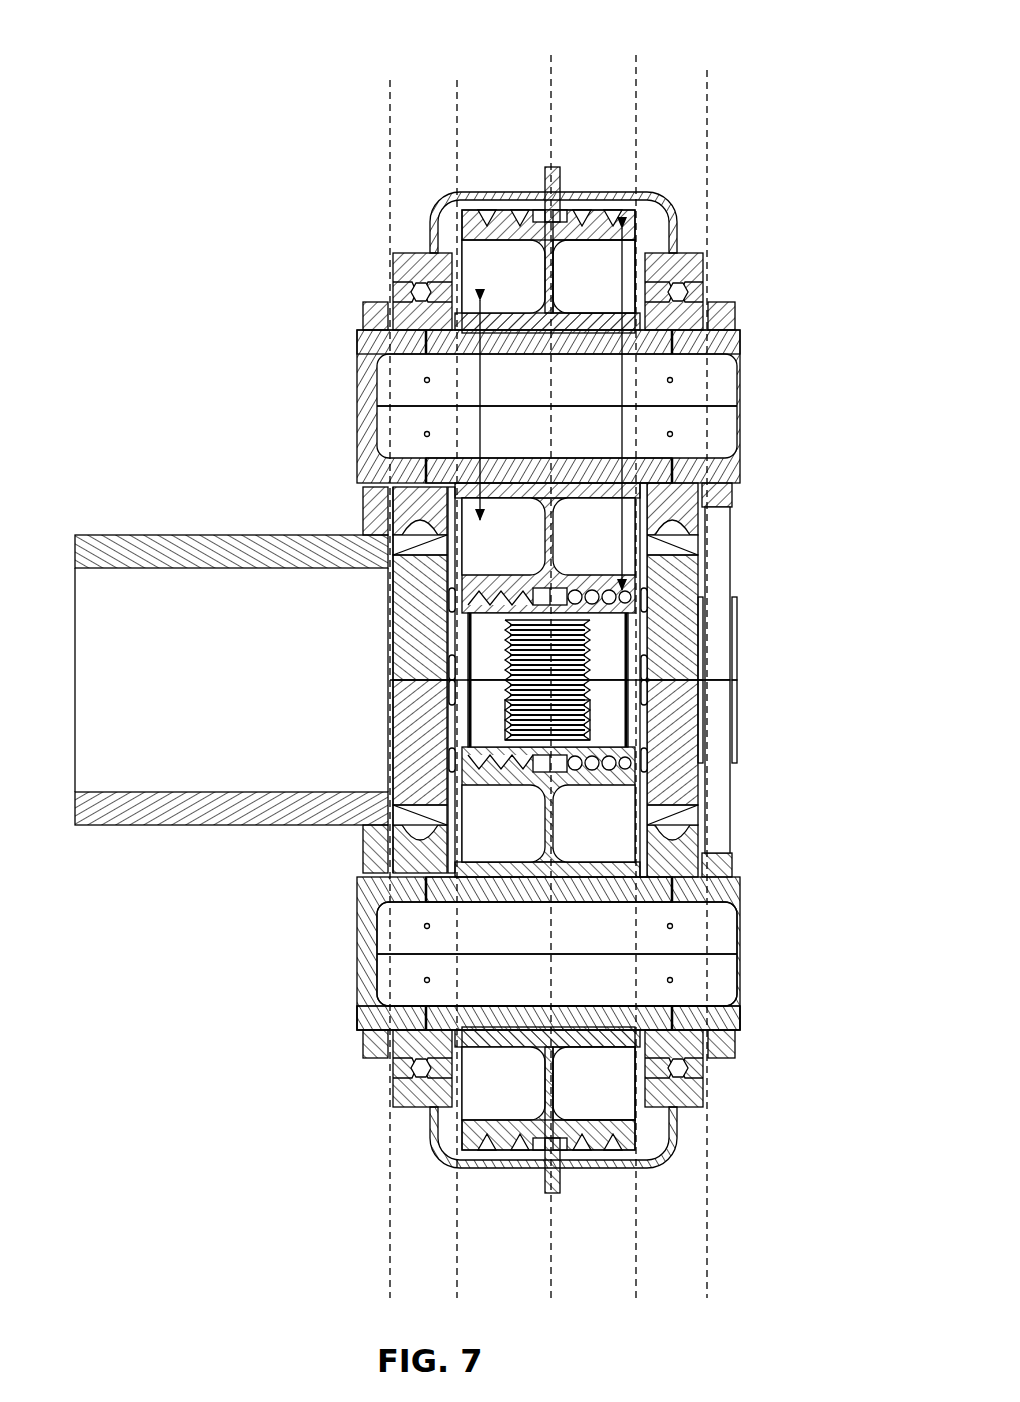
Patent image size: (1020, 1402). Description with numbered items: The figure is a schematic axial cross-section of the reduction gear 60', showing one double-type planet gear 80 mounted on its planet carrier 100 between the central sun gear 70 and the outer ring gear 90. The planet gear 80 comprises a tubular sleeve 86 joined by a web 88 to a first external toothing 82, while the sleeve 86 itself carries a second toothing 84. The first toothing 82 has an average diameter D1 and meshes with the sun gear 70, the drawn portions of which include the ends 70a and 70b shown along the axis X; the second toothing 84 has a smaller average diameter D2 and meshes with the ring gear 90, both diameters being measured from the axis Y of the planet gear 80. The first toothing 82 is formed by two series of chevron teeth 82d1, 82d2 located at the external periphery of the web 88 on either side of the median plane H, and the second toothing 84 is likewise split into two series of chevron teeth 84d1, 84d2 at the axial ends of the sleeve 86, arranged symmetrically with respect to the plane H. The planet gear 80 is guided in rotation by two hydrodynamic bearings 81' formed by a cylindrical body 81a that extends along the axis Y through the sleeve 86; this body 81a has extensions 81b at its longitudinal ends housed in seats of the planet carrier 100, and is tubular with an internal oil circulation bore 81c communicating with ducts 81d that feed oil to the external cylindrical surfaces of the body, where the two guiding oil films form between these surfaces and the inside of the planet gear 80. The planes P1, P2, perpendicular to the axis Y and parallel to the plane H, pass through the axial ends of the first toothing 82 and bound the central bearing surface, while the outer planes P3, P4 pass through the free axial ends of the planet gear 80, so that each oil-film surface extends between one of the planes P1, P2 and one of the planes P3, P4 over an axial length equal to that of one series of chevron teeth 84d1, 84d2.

The reduction gear 60' is at (500, 567).
The sun gear 70 is at (470, 716).
The spring first end 70a is at (540, 707).
The spring second end 70b is at (625, 590).
The planet gear 80 is at (645, 210).
The cylindrical body 81a is at (362, 432).
The extensions 81b is at (368, 352).
The internal oil circulation bore 81c is at (477, 1005).
The ducts 81d is at (400, 1020).
The hydrodynamic bearings 81' is at (629, 722).
The first external toothing 82 is at (548, 581).
The chevron teeth 82d1 is at (503, 680).
The chevron teeth 82d2 is at (595, 225).
The second toothing 84 is at (539, 657).
The chevron teeth 84d1 is at (375, 680).
The chevron teeth 84d2 is at (721, 680).
The tubular sleeve 86 is at (585, 300).
The web 88 is at (545, 290).
The ring gear 90 is at (440, 165).
The planet carrier 100 is at (373, 525).
The average diameter D1 is at (623, 375).
The average diameter D2 is at (480, 395).
The axis X is at (718, 690).
The axis Y is at (693, 400).
The plane H is at (552, 1270).
The plane P1 is at (458, 1268).
The plane P2 is at (637, 1207).
The plane P3 is at (388, 1207).
The plane P4 is at (708, 1252).